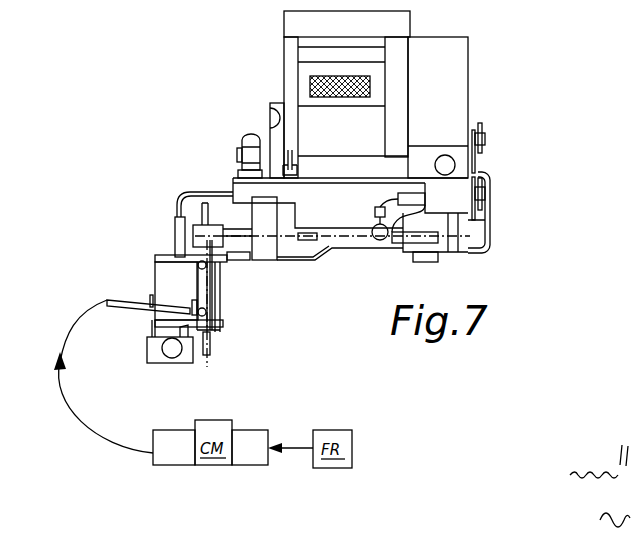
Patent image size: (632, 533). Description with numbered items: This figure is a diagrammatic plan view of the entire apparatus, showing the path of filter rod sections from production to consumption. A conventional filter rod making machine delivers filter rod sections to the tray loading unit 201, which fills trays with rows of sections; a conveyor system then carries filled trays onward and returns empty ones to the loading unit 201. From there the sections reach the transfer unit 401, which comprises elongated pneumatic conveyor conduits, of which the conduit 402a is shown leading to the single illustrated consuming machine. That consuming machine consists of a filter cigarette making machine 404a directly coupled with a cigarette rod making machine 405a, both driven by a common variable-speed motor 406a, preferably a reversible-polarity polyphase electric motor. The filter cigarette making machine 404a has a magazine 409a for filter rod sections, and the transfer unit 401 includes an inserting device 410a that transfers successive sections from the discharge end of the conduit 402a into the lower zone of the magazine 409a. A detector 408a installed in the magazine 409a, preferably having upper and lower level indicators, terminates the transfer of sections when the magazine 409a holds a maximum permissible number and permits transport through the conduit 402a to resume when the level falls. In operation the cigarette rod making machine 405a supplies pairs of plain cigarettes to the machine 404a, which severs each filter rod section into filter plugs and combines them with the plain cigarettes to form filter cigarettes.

The cigarette rod making machine 405a is at (488, 97).
The variable-speed motor 406a is at (240, 137).
The filter cigarette making machine 404a is at (250, 297).
The magazine 409a is at (210, 276).
The detector 408a is at (222, 308).
The inserting device 410a is at (105, 300).
The pneumatic conveyor conduit 402a is at (135, 341).
The transfer unit 401 is at (188, 459).
The tray loading unit 201 is at (263, 459).